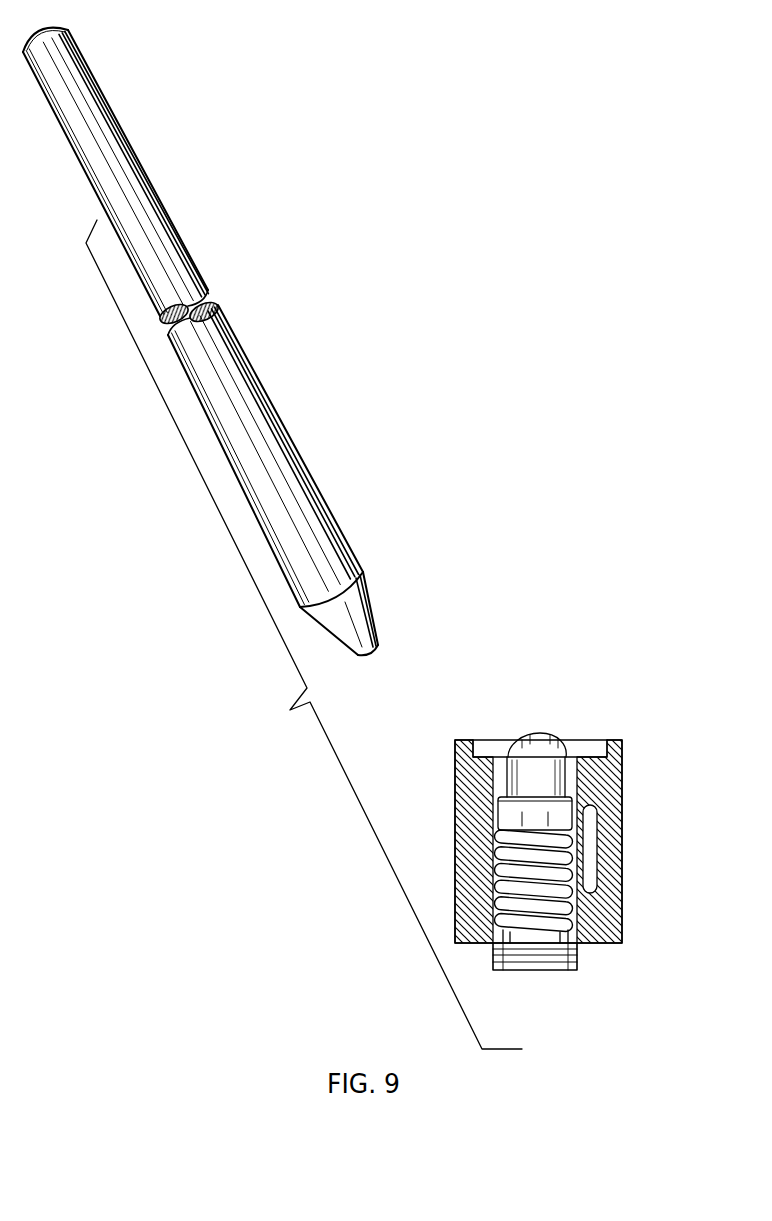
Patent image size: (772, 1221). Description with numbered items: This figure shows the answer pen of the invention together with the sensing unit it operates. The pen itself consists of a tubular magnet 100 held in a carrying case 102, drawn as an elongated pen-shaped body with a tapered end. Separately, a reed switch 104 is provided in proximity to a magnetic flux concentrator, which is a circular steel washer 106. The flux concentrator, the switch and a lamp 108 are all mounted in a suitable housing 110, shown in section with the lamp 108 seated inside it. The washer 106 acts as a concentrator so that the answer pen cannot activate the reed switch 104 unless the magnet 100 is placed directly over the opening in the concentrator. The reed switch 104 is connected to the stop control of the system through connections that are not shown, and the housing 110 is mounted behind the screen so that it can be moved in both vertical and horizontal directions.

The tubular magnet 100 is at (371, 609).
The carrying case 102 is at (344, 537).
The reed switch 104 is at (594, 842).
The circular steel washer 106 is at (597, 740).
The lamp 108 is at (537, 733).
The housing 110 is at (622, 878).